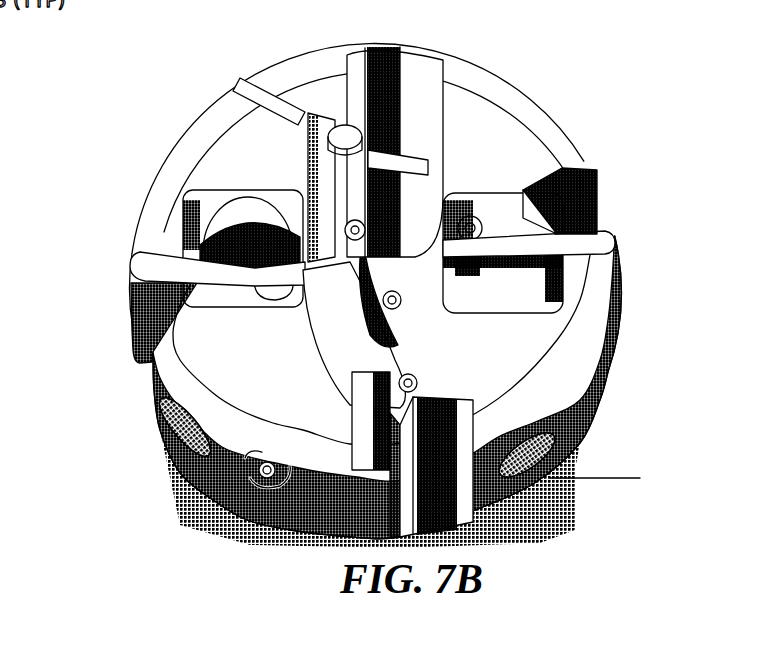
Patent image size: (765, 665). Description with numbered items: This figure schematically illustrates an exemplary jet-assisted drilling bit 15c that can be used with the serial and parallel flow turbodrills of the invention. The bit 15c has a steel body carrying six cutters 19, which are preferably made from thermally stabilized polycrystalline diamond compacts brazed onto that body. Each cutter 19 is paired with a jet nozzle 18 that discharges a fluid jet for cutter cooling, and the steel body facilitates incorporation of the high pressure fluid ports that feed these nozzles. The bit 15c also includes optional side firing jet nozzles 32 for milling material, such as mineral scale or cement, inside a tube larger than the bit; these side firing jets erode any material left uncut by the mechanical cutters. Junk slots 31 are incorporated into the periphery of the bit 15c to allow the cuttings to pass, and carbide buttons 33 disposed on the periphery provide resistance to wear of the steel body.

The bit 15c is at (530, 107).
The jet nozzle 18 is at (338, 130).
The cutter 19 is at (415, 63).
The junk slot 31 is at (570, 203).
The side firing jet nozzle 32 is at (267, 467).
The carbide button 33 is at (184, 432).